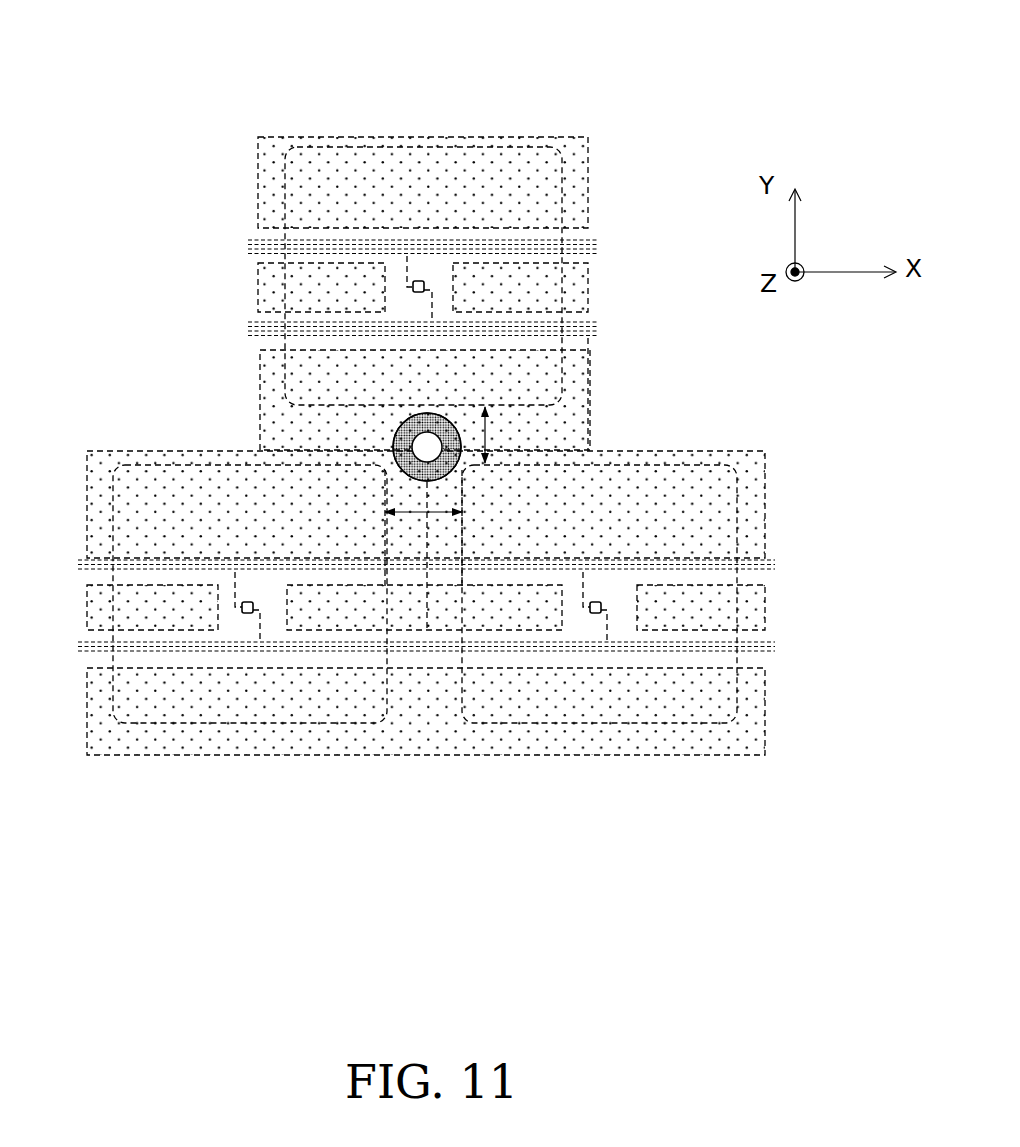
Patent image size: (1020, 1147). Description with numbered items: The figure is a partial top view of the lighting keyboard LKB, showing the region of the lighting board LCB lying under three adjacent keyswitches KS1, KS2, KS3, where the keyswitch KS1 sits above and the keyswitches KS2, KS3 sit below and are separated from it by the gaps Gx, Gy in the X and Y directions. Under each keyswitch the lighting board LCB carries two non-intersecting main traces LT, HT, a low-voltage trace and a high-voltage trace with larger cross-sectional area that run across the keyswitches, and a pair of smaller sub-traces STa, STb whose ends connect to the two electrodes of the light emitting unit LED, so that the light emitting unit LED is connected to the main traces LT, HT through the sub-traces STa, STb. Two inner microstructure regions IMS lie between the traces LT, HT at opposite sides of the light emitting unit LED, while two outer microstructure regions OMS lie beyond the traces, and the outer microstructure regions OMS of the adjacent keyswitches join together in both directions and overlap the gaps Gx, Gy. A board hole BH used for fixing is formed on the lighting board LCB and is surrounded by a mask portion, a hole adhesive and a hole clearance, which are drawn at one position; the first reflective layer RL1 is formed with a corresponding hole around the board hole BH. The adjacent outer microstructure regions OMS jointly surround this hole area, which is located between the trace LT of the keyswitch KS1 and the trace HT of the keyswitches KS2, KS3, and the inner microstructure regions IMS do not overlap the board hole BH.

The lighting keyboard LKB is at (312, 82).
The lighting board LCB is at (688, 423).
The outer microstructure regions OMS is at (260, 183).
The inner microstructure regions IMS is at (492, 583).
The high-voltage trace HT is at (597, 242).
The low-voltage trace LT is at (585, 318).
The keyswitch KS1 is at (278, 276).
The keyswitch KS2 is at (175, 450).
The keyswitch KS3 is at (607, 447).
The board hole BH is at (394, 441).
The first reflective layer RL1 is at (392, 470).
The sub-trace STa is at (590, 588).
The sub-trace STb is at (610, 627).
The light emitting unit LED is at (596, 613).
The gap in X direction Gx is at (423, 499).
The gap in Y direction Gy is at (501, 435).